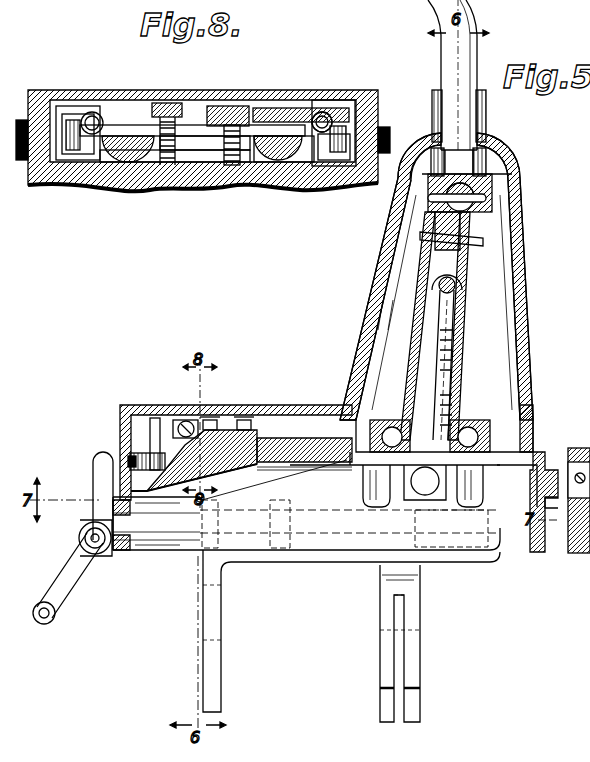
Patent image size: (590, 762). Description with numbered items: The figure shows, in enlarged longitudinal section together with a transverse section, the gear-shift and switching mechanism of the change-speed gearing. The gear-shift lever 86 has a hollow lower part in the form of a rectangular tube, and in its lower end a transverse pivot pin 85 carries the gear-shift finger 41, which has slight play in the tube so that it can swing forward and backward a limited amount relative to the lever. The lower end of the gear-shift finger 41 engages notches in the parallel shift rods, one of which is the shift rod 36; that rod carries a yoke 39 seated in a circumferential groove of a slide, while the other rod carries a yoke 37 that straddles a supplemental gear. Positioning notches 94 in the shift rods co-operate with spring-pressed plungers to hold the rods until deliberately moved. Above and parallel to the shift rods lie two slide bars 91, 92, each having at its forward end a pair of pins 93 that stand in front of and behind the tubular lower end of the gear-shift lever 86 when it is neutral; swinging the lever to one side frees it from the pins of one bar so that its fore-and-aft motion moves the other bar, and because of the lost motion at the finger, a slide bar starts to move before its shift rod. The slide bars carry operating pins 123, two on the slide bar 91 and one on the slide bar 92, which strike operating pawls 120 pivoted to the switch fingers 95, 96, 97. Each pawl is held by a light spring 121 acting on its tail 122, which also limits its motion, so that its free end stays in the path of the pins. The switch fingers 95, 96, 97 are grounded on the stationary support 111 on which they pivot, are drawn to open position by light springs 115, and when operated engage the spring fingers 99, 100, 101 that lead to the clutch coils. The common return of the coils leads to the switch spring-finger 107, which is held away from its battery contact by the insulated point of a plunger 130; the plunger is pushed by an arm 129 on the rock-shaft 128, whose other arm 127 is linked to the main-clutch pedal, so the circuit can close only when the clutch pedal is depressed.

In FIG. 5, the shift rod 36 is at (352, 565).
In FIG. 5, the yoke 37 is at (421, 683).
In FIG. 5, the yoke 39 is at (222, 685).
In FIG. 5, the gear-shift finger 41 is at (447, 388).
In FIG. 5, the transverse pivot pin 85 is at (455, 283).
In FIG. 5, the gear-shift lever 86 is at (478, 62).
In FIG. 8, the slide bar 91 is at (130, 187).
In FIG. 5, the slide bar 91 is at (392, 426).
In FIG. 8, the slide bar 92 is at (285, 188).
In FIG. 5, the pins 93 is at (445, 425).
In FIG. 5, the positioning notches 94 is at (366, 487).
In FIG. 8, the switch finger 95 is at (113, 124).
In FIG. 5, the switch finger 95 is at (258, 416).
In FIG. 5, the switch finger 96 is at (214, 418).
In FIG. 8, the switch finger 97 is at (324, 110).
In FIG. 5, the switch finger 97 is at (453, 220).
In FIG. 8, the spring finger 99 is at (73, 185).
In FIG. 5, the spring finger 100 is at (181, 504).
In FIG. 8, the spring finger 101 is at (312, 190).
In FIG. 5, the switch spring-finger 107 is at (152, 470).
In FIG. 8, the stationary support 111 is at (188, 188).
In FIG. 8, the spring 115 is at (93, 111).
In FIG. 8, the operating pawl 120 is at (110, 187).
In FIG. 8, the spring 121 is at (168, 104).
In FIG. 8, the tail 122 is at (170, 187).
In FIG. 8, the operating pin 123 is at (150, 100).
In FIG. 5, the arm 127 is at (64, 602).
In FIG. 5, the rock-shaft 128 is at (110, 567).
In FIG. 5, the arm 129 is at (97, 470).
In FIG. 5, the plunger 130 is at (122, 452).